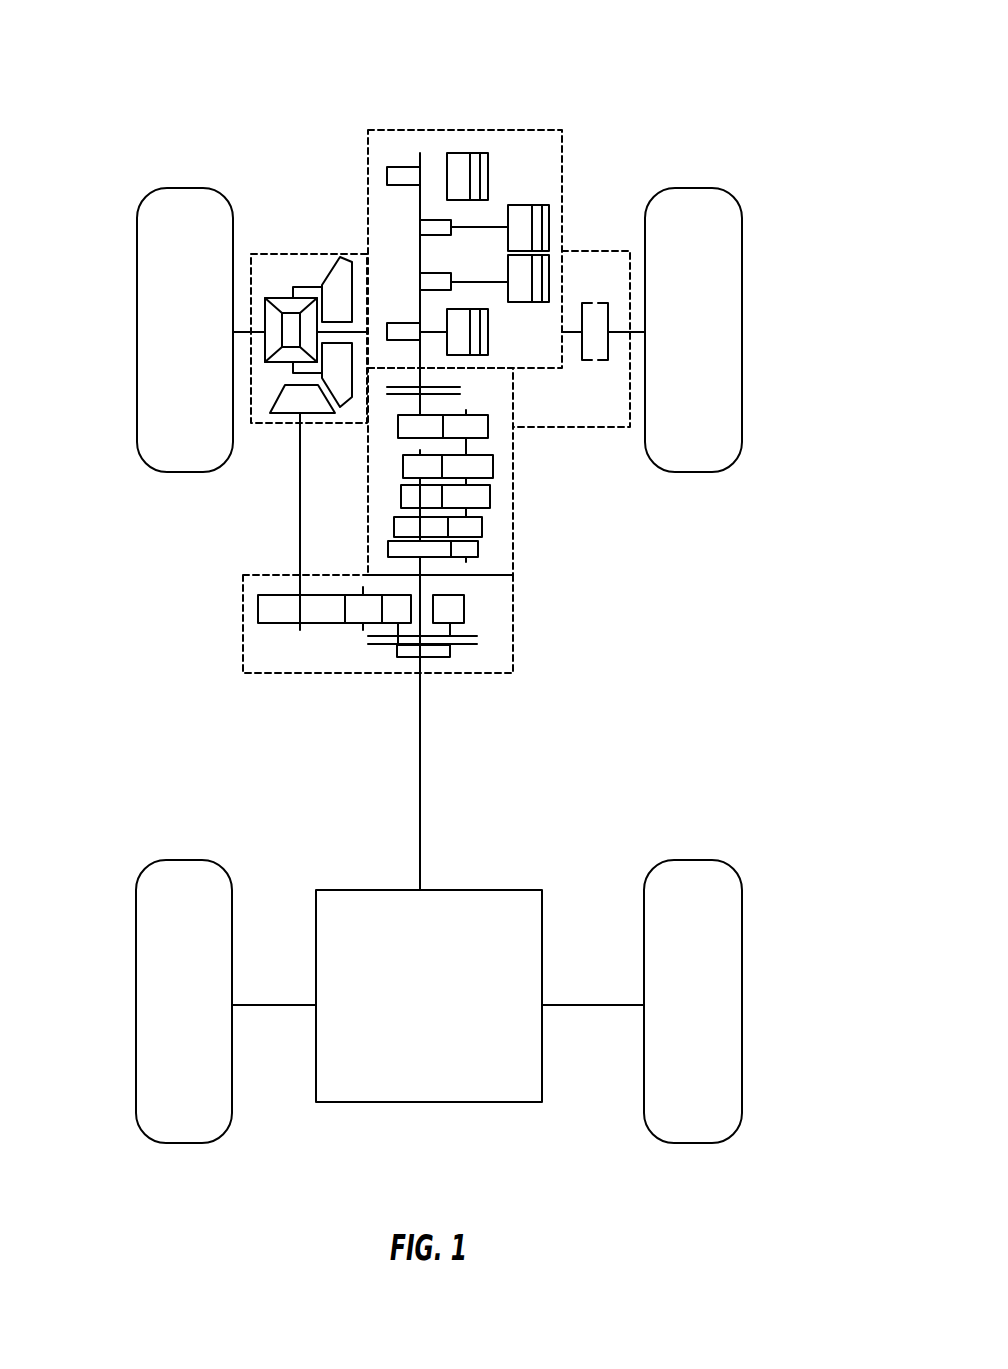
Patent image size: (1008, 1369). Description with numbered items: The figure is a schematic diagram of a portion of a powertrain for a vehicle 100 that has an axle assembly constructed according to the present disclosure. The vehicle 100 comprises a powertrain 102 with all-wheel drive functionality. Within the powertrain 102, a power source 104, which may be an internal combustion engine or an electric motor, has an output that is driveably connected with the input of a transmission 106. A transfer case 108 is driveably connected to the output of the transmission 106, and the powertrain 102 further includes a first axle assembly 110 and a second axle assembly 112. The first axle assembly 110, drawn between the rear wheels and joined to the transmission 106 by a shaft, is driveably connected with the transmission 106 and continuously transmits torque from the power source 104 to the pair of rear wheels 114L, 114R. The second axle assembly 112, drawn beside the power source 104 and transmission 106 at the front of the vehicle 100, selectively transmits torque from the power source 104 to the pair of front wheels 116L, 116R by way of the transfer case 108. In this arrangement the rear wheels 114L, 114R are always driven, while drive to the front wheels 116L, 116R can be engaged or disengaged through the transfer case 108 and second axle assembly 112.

The vehicle 100 is at (713, 92).
The powertrain 102 is at (547, 651).
The power source 104 is at (532, 160).
The transmission 106 is at (498, 535).
The transfer case 108 is at (498, 601).
The first axle assembly 110 is at (401, 1102).
The second axle assembly 112 is at (290, 257).
The rear wheel 114L is at (162, 900).
The rear wheel 114R is at (718, 895).
The front wheel 116L is at (167, 233).
The front wheel 116R is at (718, 237).